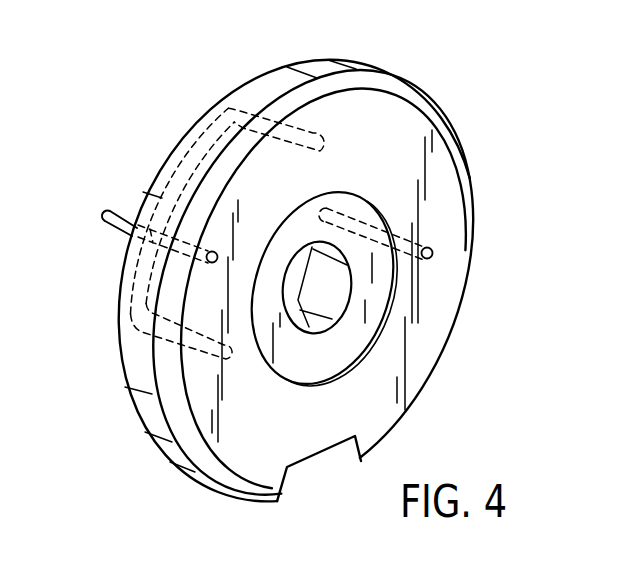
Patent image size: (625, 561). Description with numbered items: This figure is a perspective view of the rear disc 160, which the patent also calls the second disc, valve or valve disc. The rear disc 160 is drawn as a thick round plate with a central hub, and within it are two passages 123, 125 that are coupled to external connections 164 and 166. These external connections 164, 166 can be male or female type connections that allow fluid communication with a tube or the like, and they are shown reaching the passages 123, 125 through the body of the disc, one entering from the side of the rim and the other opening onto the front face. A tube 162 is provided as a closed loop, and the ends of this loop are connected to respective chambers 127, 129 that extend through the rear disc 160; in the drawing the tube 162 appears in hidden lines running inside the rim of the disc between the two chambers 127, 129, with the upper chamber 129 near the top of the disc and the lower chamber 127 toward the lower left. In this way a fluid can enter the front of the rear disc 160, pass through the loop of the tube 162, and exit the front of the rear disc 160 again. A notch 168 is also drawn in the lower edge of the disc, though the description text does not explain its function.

The rear disc 160 is at (472, 78).
The tube 162 is at (155, 202).
The chamber 129 is at (313, 133).
The passage 123 is at (228, 189).
The external connection 164 is at (122, 230).
The external connection 166 is at (355, 203).
The passage 125 is at (428, 259).
The chamber 127 is at (190, 353).
The notch 168 is at (343, 453).